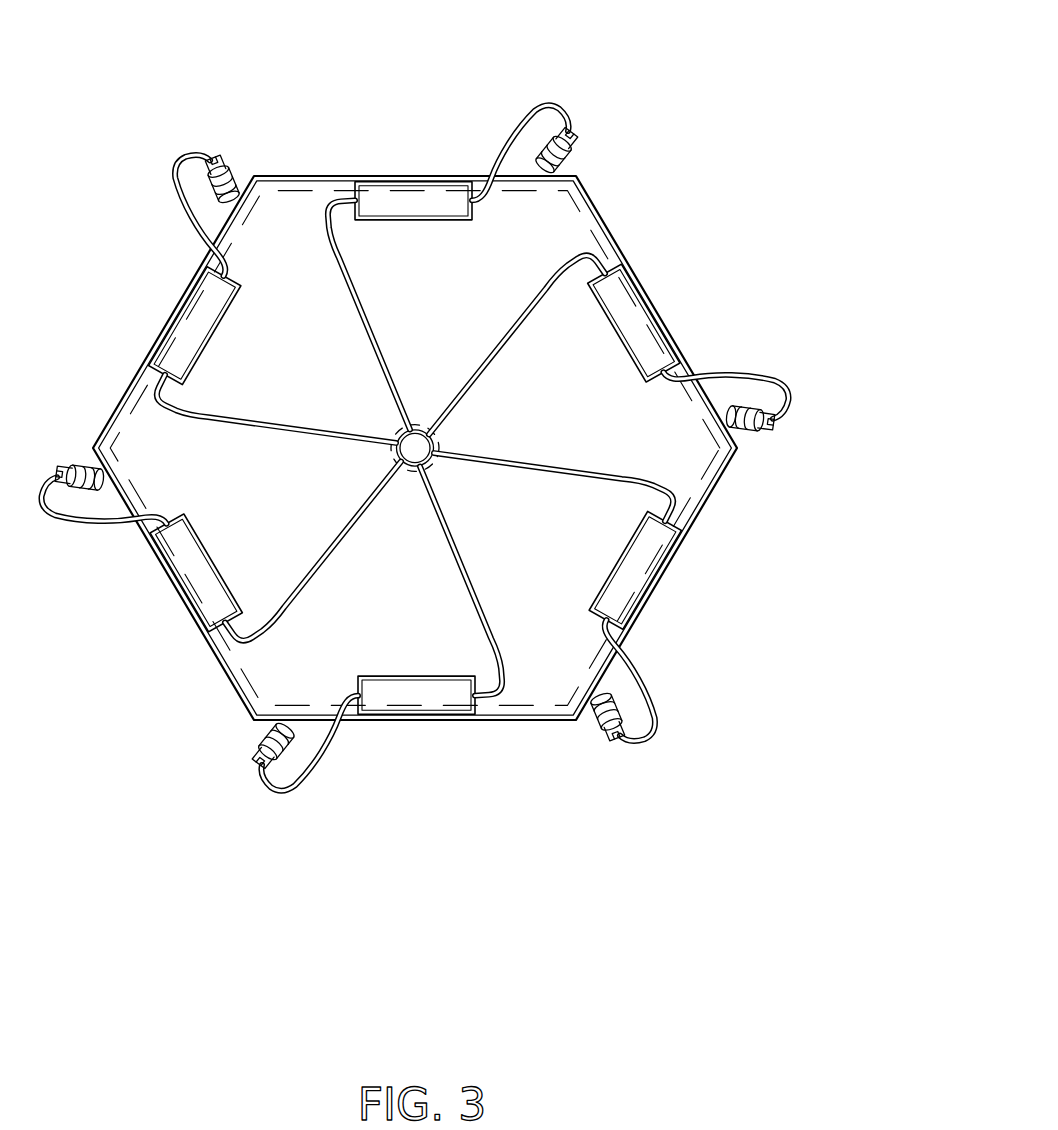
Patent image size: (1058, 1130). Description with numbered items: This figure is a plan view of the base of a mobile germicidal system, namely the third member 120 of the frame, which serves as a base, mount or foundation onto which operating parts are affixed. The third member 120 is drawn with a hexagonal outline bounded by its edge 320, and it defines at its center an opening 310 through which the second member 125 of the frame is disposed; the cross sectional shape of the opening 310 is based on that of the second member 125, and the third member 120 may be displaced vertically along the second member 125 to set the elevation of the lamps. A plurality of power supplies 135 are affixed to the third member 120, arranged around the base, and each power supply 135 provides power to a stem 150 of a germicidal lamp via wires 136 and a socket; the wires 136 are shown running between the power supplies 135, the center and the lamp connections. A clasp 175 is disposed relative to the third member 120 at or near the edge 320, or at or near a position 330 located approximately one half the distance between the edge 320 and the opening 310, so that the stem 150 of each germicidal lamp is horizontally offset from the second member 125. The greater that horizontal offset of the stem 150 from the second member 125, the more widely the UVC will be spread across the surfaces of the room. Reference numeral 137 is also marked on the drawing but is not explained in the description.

The third member 120 is at (515, 448).
The second member 125 is at (658, 295).
The power supply 135 is at (766, 275).
The wires 136 is at (803, 354).
The hub cable 137 is at (514, 644).
The stem 150 is at (823, 461).
The clasp 175 is at (694, 750).
The opening 310 is at (395, 623).
The edge 320 is at (506, 381).
The position 330 is at (318, 339).